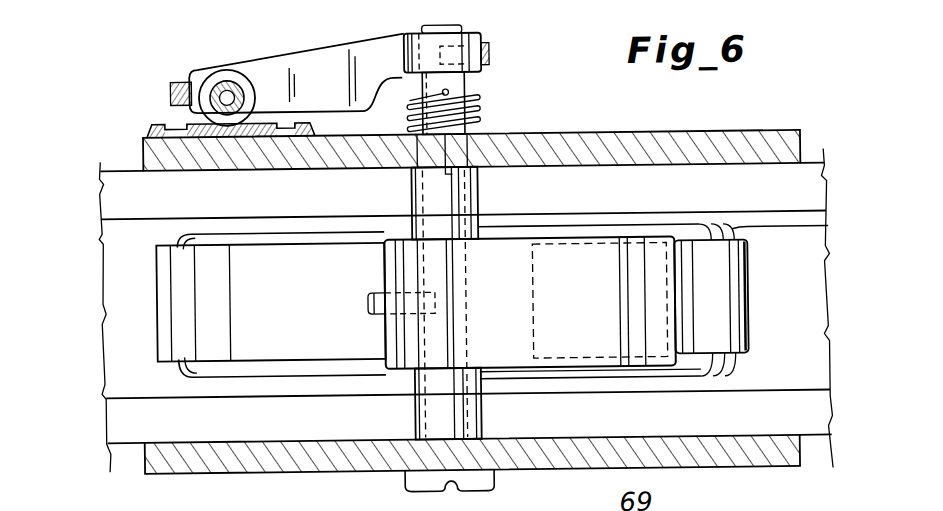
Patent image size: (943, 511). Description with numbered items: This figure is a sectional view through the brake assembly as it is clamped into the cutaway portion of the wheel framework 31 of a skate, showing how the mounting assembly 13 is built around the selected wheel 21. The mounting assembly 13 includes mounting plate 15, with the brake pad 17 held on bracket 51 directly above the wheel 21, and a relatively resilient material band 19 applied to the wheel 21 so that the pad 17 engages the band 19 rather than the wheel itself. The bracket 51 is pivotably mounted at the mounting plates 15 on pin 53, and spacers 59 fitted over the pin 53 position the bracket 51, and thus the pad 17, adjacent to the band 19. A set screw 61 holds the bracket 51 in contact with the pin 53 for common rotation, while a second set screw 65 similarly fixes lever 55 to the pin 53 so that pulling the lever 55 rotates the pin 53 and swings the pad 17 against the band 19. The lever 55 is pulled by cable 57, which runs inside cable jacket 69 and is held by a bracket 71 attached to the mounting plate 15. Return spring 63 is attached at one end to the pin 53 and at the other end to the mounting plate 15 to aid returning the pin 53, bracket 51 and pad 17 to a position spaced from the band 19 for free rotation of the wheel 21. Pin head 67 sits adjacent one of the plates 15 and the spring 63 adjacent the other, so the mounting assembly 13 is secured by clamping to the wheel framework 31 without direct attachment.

The mounting assembly 13 is at (719, 138).
The mounting plate 15 is at (612, 145).
The brake pad 17 is at (644, 259).
The resilient material band 19 is at (746, 312).
The selected wheel 21 is at (799, 228).
The wheel framework 31 is at (112, 188).
The bracket 51 is at (511, 250).
The pin 53 is at (468, 87).
The lever 55 is at (346, 62).
The cable 57 is at (241, 89).
The spacers 59 is at (479, 192).
The set screw 61 is at (368, 304).
The return spring 63 is at (479, 100).
The set screw 65 is at (493, 43).
The pin head 67 is at (403, 486).
The cable jacket 69 is at (225, 82).
The bracket 71 is at (152, 126).